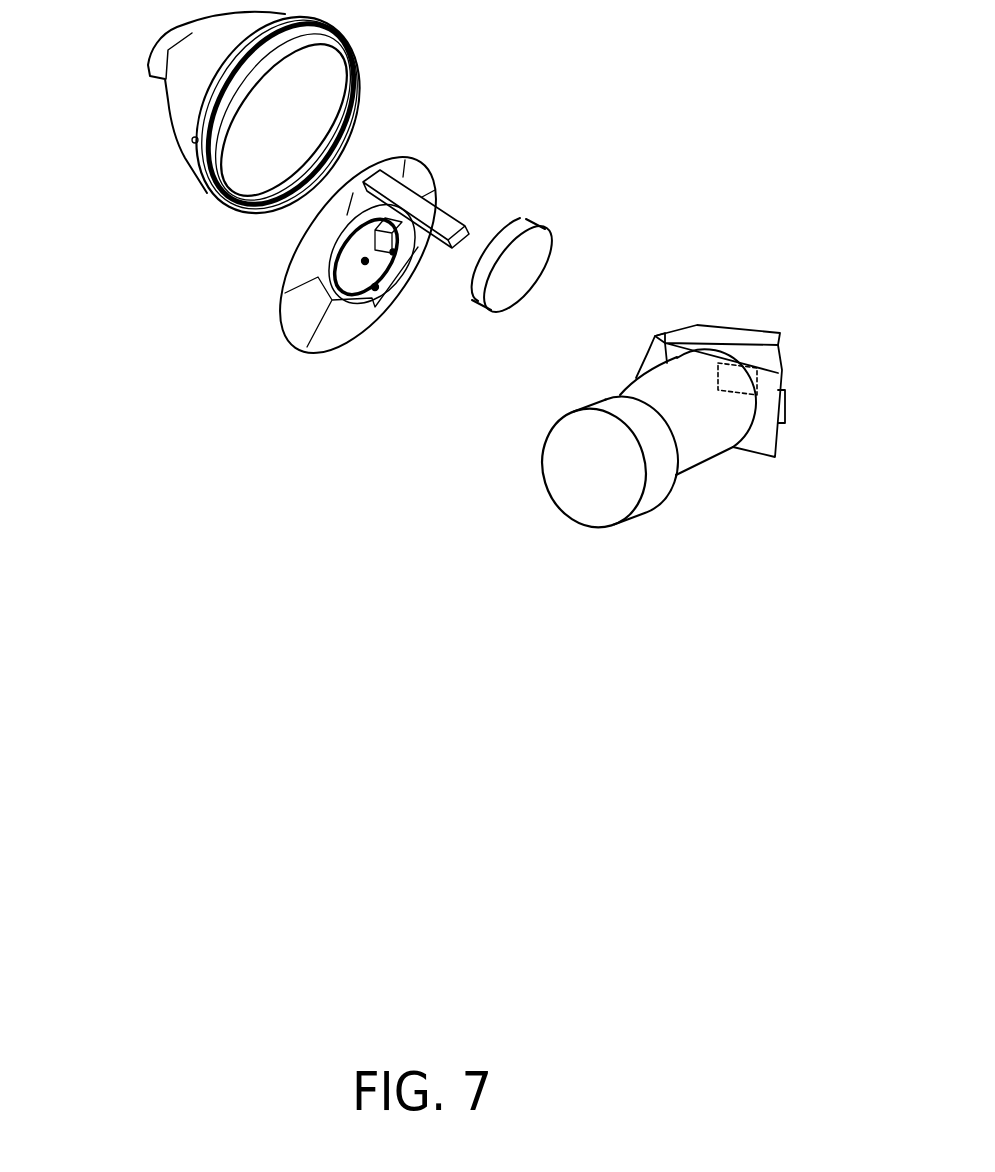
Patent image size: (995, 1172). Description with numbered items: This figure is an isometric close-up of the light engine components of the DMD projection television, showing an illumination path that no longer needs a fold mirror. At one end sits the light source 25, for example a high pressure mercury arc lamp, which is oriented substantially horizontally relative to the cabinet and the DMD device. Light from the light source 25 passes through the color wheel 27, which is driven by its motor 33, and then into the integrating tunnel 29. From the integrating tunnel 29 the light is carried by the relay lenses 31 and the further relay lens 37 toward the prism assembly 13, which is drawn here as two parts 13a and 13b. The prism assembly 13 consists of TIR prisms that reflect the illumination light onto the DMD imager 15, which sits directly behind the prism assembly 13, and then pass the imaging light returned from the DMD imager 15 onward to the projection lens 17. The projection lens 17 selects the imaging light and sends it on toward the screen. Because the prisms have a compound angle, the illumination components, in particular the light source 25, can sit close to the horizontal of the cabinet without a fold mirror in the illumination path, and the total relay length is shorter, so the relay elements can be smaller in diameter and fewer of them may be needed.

The prism assembly 13 is at (709, 392).
The lamp unit top cover 13a is at (702, 338).
The lamp unit mounting plate 13b is at (768, 418).
The DMD imager 15 is at (735, 378).
The projection lens 17 is at (688, 420).
The light source 25 is at (193, 102).
The color wheel 27 is at (338, 323).
The integrating tunnel 29 is at (440, 213).
The relay lenses 31 is at (530, 257).
The motor 33 is at (387, 267).
The further relay lens 37 is at (640, 352).